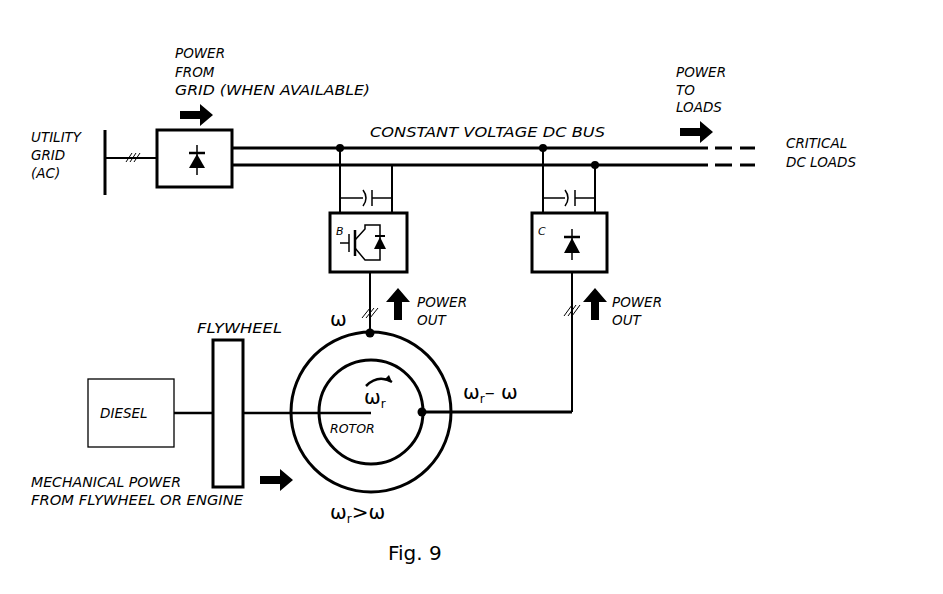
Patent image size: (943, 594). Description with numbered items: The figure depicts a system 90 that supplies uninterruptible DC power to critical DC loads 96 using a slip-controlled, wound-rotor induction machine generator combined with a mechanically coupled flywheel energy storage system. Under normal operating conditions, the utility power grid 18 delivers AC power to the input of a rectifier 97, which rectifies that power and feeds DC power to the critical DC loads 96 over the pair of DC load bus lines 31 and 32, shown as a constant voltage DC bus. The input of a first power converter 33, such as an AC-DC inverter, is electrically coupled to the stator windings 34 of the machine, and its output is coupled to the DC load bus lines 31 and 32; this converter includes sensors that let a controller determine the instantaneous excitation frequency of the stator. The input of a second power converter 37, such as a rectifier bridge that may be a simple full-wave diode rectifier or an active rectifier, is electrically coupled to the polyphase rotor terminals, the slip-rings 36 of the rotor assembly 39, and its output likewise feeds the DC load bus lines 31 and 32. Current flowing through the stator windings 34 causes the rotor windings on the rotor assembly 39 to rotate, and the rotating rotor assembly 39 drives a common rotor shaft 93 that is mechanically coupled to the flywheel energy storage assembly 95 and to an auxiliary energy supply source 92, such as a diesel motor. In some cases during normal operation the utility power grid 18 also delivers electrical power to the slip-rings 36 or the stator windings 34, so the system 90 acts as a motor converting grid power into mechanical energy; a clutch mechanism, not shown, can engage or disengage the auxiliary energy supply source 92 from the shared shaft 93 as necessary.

The utility power grid 18 is at (104, 183).
The rectifier 97 is at (183, 190).
The DC load bus line 31 is at (276, 143).
The DC load bus line 32 is at (266, 172).
The first power converter 33 is at (330, 250).
The second power converter 37 is at (608, 242).
The stator windings 34 is at (362, 326).
The slip-rings 36 is at (426, 415).
The rotor assembly 39 is at (408, 371).
The system 90 is at (170, 291).
The auxiliary energy supply source 92 is at (107, 378).
The rotor shaft 93 is at (190, 418).
The flywheel energy storage assembly 95 is at (245, 372).
The critical DC loads 96 is at (788, 137).